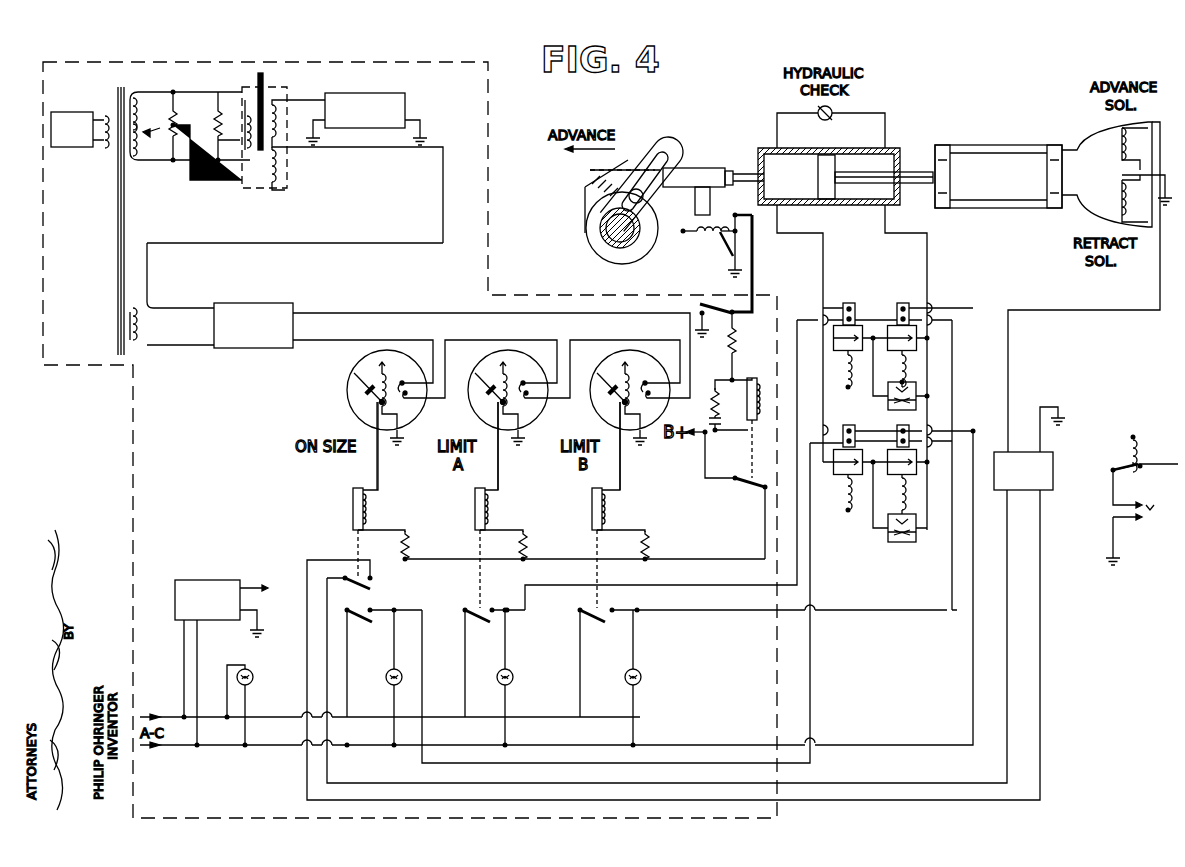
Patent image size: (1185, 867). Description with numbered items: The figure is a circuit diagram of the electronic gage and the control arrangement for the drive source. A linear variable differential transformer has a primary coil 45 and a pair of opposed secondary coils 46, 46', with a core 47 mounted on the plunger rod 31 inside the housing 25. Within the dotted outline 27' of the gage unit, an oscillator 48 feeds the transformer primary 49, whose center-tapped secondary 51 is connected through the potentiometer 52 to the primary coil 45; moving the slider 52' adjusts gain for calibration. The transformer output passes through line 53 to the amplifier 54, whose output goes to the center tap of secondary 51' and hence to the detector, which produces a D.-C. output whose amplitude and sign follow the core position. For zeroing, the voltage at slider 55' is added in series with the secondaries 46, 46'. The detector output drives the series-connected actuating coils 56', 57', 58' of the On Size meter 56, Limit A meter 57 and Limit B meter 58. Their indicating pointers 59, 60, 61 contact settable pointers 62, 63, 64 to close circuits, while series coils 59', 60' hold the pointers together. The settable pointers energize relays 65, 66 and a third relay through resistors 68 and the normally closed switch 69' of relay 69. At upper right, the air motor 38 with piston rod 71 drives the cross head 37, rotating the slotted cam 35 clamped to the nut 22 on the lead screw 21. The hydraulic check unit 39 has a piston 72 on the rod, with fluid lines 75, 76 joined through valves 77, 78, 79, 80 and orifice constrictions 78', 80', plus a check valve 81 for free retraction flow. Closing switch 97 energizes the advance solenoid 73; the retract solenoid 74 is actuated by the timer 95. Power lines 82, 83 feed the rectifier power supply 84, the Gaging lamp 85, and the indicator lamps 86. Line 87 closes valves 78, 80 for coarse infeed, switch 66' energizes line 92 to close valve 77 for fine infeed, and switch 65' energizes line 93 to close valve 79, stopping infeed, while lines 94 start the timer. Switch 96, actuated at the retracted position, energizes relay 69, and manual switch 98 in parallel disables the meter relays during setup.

The lead screw 21 is at (590, 248).
The nut 22 is at (600, 228).
The housing 25 is at (288, 190).
The dotted outline 27' is at (410, 440).
The plunger rod 31 is at (262, 88).
The slotted cam 35 is at (588, 196).
The cross head 37 is at (700, 170).
The air motor 38 is at (1015, 145).
The hydraulic check unit 39 is at (862, 140).
The primary coil 45 is at (242, 105).
The secondary coil 46 is at (298, 116).
The secondary coil 46' is at (294, 164).
The core 47 is at (278, 148).
The oscillator 48 is at (76, 112).
The transformer primary 49 is at (108, 116).
The center-tapped secondary 51 is at (148, 126).
The transformer secondary 51' is at (154, 324).
The potentiometer 52 is at (209, 83).
The slider 52' is at (232, 127).
The line 53 is at (308, 104).
The amplifier 54 is at (368, 93).
The slider 55' is at (190, 135).
The On Size meter 56 is at (368, 390).
The actuating coil 56' is at (421, 416).
The Limit A meter 57 is at (500, 389).
The actuating coil 57' is at (542, 416).
The Limit B meter 58 is at (621, 389).
The actuating coil 58' is at (670, 405).
The indicating pointer 59 is at (371, 392).
The series coil 59' is at (413, 366).
The indicating pointer 60 is at (512, 381).
The series coil 60' is at (597, 367).
The indicating pointer 61 is at (627, 362).
The settable pointer 62 is at (360, 405).
The settable pointer 63 is at (482, 404).
The settable pointer 64 is at (604, 408).
The On Size relay 65 is at (345, 490).
The relay switch 65' is at (667, 636).
The Limit A relay 66 is at (467, 505).
The relay switch 66' is at (494, 663).
The resistor 68 is at (409, 545).
The relay 69 is at (734, 428).
The relay switch 69' is at (736, 495).
The piston rod 71 is at (922, 165).
The piston 72 is at (822, 158).
The advance solenoid 73 is at (1118, 148).
The retract solenoid 74 is at (1118, 195).
The fluid line 75 is at (815, 272).
The fluid line 76 is at (928, 272).
The valve 77 is at (856, 318).
The valve 78 is at (917, 333).
The adjustable orifice constriction 78' is at (896, 380).
The valve 79 is at (845, 486).
The valve 80 is at (906, 467).
The adjustable orifice constriction 80' is at (900, 513).
The hydraulic check valve 81 is at (831, 111).
The return line 82 is at (278, 752).
The line 83 is at (267, 717).
The rectifier power supply 84 is at (208, 580).
The lamp 85 is at (256, 676).
The indicator lamp 86 is at (400, 670).
The line 87 is at (712, 612).
The line 92 is at (692, 590).
The line 93 is at (423, 698).
The lines 94 is at (352, 800).
The timer 95 is at (1045, 490).
The switch 96 is at (716, 240).
The switch 97 is at (1126, 478).
The manually operated switch 98 is at (717, 306).